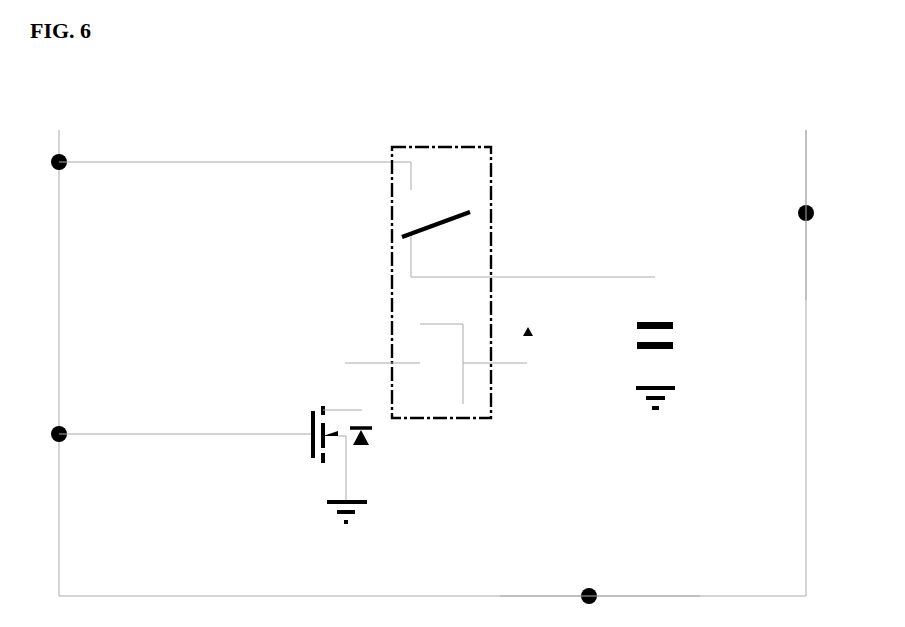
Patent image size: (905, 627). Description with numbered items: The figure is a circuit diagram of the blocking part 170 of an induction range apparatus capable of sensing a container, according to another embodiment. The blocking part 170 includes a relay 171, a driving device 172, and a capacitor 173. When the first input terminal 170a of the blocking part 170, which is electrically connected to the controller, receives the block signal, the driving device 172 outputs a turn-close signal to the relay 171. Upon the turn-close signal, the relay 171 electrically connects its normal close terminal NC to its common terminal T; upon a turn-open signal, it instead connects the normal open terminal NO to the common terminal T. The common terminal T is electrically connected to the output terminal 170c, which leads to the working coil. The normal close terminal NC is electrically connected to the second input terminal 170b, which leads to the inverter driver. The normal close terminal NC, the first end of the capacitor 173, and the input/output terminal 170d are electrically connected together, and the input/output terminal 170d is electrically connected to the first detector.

The blocking part 170 is at (455, 247).
The first input terminal 170a is at (64, 168).
The second input terminal 170b is at (64, 440).
The output terminal 170c is at (800, 217).
The input/output terminal 170d is at (594, 590).
The relay 171 is at (493, 177).
The driving device 172 is at (323, 395).
The capacitor 173 is at (683, 336).